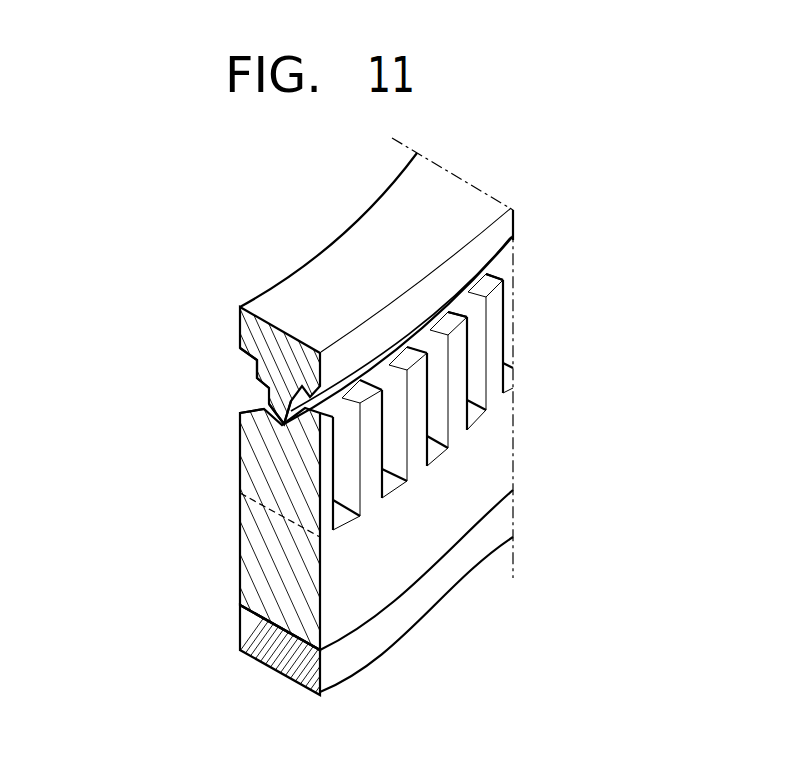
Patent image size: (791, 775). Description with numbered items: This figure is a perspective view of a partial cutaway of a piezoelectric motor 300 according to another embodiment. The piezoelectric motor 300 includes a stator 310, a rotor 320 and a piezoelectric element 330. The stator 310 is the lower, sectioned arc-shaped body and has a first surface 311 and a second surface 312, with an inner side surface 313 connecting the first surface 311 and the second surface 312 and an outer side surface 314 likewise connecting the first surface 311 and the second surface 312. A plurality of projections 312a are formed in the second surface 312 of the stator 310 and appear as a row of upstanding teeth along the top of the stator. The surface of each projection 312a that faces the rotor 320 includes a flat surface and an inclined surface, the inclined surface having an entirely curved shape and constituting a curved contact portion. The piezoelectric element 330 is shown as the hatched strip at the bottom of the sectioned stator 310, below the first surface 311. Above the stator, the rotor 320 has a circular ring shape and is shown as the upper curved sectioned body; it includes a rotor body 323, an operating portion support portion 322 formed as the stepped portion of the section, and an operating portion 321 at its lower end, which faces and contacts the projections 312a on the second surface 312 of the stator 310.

The piezoelectric motor 300 is at (626, 167).
The stator 310 is at (360, 487).
The first surface 311 is at (256, 622).
The second surface 312 is at (437, 452).
The projection 312a is at (280, 475).
The inner side surface 313 is at (240, 543).
The outer side surface 314 is at (377, 595).
The rotor 320 is at (291, 292).
The operating portion 321 is at (258, 407).
The operating portion support portion 322 is at (258, 368).
The rotor body 323 is at (253, 335).
The piezoelectric element 330 is at (262, 641).